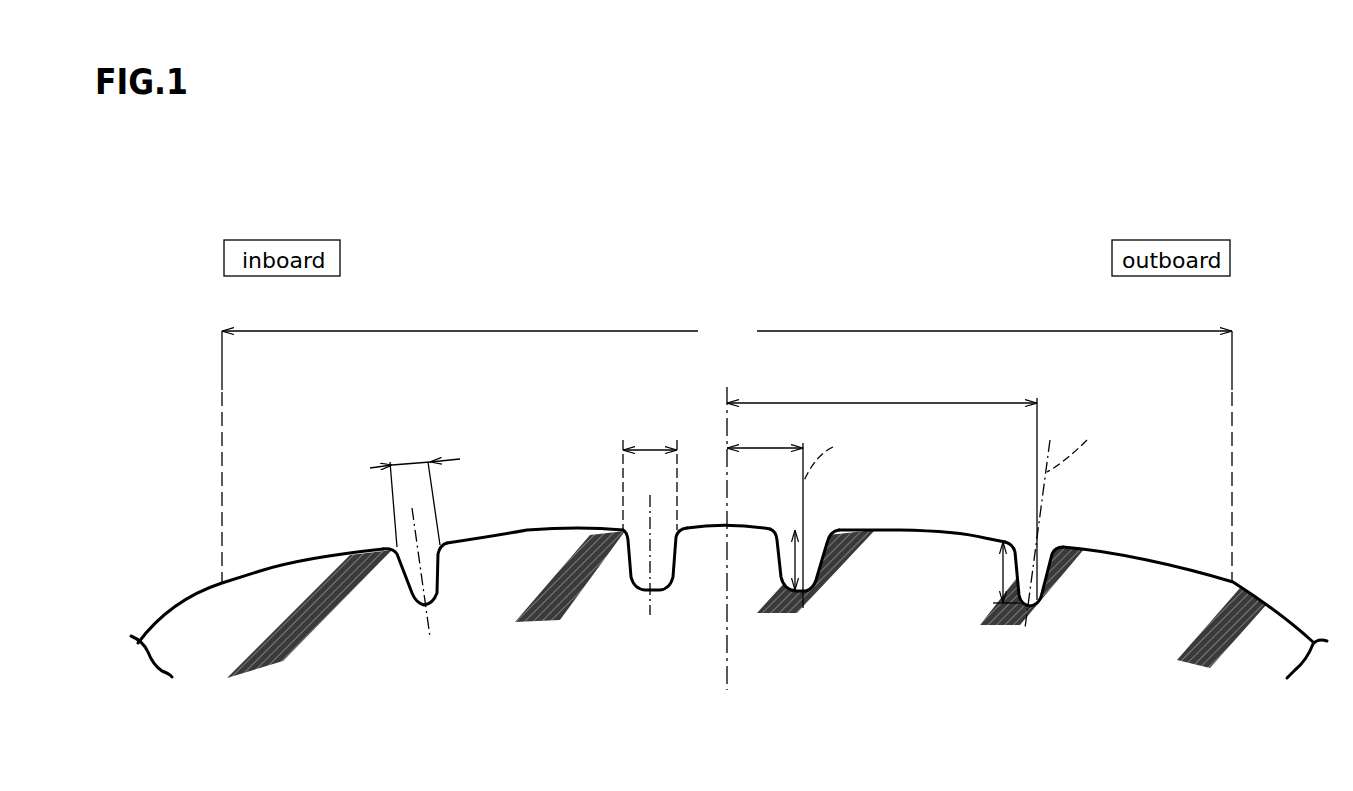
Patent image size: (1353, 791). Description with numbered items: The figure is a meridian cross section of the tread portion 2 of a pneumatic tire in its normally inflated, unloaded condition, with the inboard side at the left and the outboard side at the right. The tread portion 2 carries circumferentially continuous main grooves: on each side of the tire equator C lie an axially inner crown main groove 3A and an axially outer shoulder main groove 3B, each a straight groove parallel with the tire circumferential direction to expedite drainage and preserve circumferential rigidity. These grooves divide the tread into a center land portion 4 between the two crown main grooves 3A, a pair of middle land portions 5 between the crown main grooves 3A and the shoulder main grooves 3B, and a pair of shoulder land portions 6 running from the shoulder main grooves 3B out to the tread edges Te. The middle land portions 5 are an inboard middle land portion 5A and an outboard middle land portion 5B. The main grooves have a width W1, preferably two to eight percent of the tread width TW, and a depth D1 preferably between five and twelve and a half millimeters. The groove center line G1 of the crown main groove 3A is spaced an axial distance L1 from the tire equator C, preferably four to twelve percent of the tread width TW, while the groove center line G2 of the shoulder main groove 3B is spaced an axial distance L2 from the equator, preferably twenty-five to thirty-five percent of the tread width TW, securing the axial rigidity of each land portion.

The tread portion 2 is at (728, 504).
The crown main groove 3A is at (643, 557).
The shoulder main groove 3B is at (428, 565).
The center land portion 4 is at (707, 525).
The middle land portion 5 is at (726, 482).
The inboard middle land portion 5A is at (523, 523).
The outboard middle land portion 5B is at (905, 527).
The shoulder land portion 6 is at (318, 553).
The tread edge Te is at (220, 582).
The tread width TW is at (727, 332).
The tire equator C is at (727, 522).
The axial distance of groove center line of crown main groove from tire equator L1 is at (765, 514).
The axial distance of groove center line of shoulder main groove from tire equator L2 is at (882, 487).
The groove width W1 is at (523, 485).
The groove depth D1 is at (790, 557).
The groove center line of crown main groove G1 is at (829, 451).
The groove center line of shoulder main groove G2 is at (1080, 443).